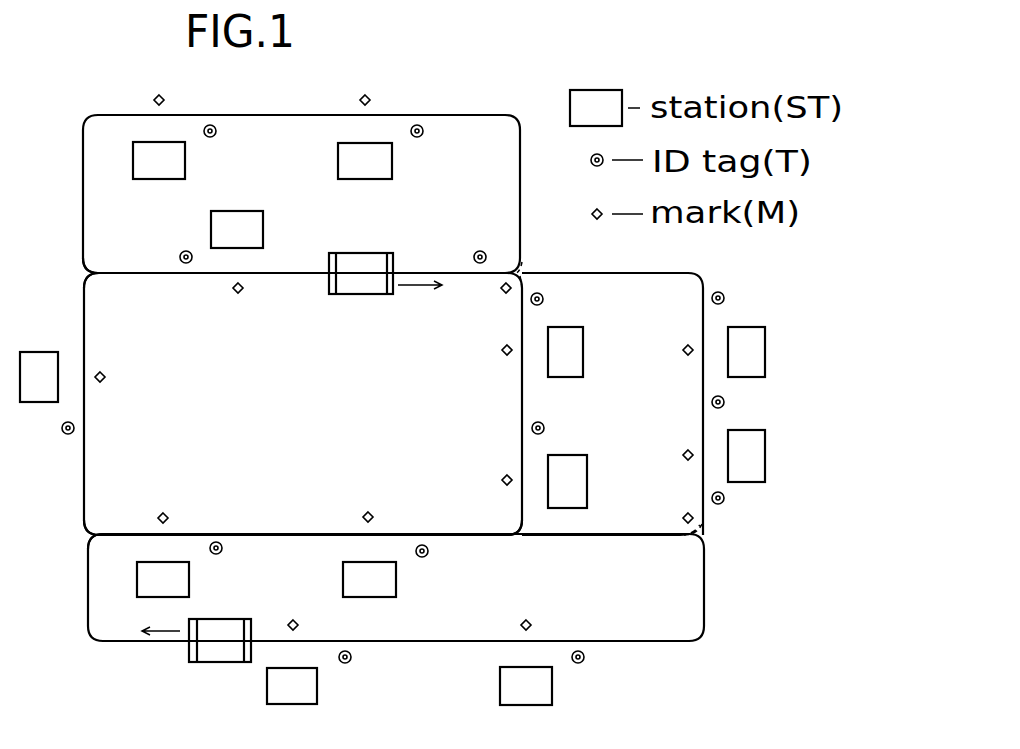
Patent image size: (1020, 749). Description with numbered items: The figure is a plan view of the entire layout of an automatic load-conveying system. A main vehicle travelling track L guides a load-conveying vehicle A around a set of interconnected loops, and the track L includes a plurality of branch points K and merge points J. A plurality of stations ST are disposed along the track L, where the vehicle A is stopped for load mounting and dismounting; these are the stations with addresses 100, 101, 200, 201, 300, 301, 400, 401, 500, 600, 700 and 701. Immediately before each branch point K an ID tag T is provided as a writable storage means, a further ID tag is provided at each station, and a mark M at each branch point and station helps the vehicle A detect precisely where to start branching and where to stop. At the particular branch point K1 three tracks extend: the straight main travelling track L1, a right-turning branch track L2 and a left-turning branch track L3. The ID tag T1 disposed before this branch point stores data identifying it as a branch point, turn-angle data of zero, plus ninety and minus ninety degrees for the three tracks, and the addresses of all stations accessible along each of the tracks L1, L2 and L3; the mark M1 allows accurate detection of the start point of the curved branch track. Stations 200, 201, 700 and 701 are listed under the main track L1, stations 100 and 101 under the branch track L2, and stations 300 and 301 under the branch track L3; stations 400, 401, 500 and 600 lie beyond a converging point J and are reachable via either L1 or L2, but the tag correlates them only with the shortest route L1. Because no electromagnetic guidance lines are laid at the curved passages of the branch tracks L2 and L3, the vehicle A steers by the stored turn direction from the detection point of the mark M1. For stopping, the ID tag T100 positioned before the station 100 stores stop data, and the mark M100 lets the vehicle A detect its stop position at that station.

The station 100 is at (583, 360).
The station 101 is at (587, 480).
The station 200 is at (750, 327).
The station 201 is at (750, 482).
The station 300 is at (392, 161).
The station 301 is at (185, 160).
The station 400 is at (396, 580).
The station 401 is at (189, 580).
The station 500 is at (33, 352).
The station 600 is at (211, 228).
The station 700 is at (552, 690).
The station 701 is at (317, 688).
The load-conveying vehicle A is at (345, 296).
The main vehicle travelling track L is at (197, 282).
The main travelling track L1 is at (668, 275).
The right-turning branch track L2 is at (520, 405).
The left-turning branch track L3 is at (520, 193).
The merge point J is at (65, 256).
The branch point K is at (689, 560).
The branch point K1 is at (541, 258).
The ID tag T1 is at (475, 252).
The ID tag T100 is at (545, 299).
The mark M1 is at (502, 292).
The mark M100 is at (503, 352).